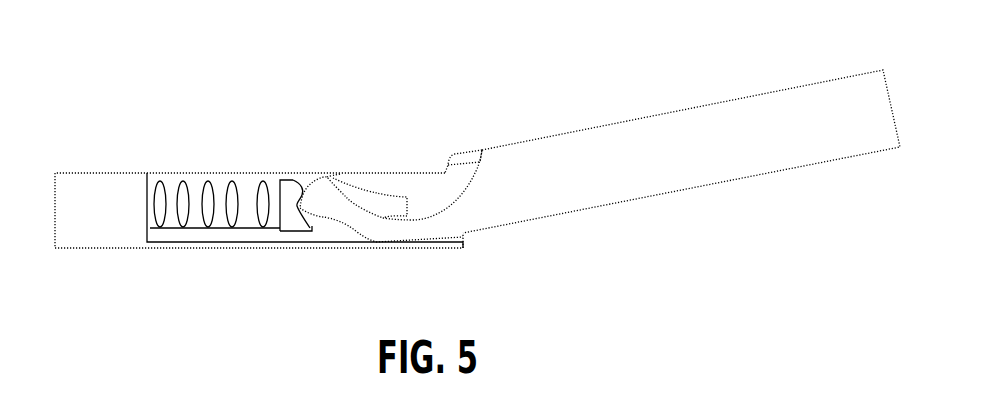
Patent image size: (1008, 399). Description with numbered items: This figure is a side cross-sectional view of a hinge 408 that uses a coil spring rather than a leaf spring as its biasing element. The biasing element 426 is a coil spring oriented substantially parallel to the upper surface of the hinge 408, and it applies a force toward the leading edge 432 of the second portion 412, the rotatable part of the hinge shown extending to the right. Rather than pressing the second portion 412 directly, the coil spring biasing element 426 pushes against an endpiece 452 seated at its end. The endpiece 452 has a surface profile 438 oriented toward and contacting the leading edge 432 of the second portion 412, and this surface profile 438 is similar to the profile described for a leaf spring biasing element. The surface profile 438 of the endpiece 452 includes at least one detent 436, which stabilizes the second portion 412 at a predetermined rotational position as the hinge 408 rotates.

The hinge 408 is at (511, 36).
The second portion 412 is at (510, 208).
The biasing element 426 is at (212, 180).
The leading edge 432 is at (317, 188).
The detent 436 is at (298, 197).
The surface profile 438 is at (308, 228).
The endpiece 452 is at (288, 225).